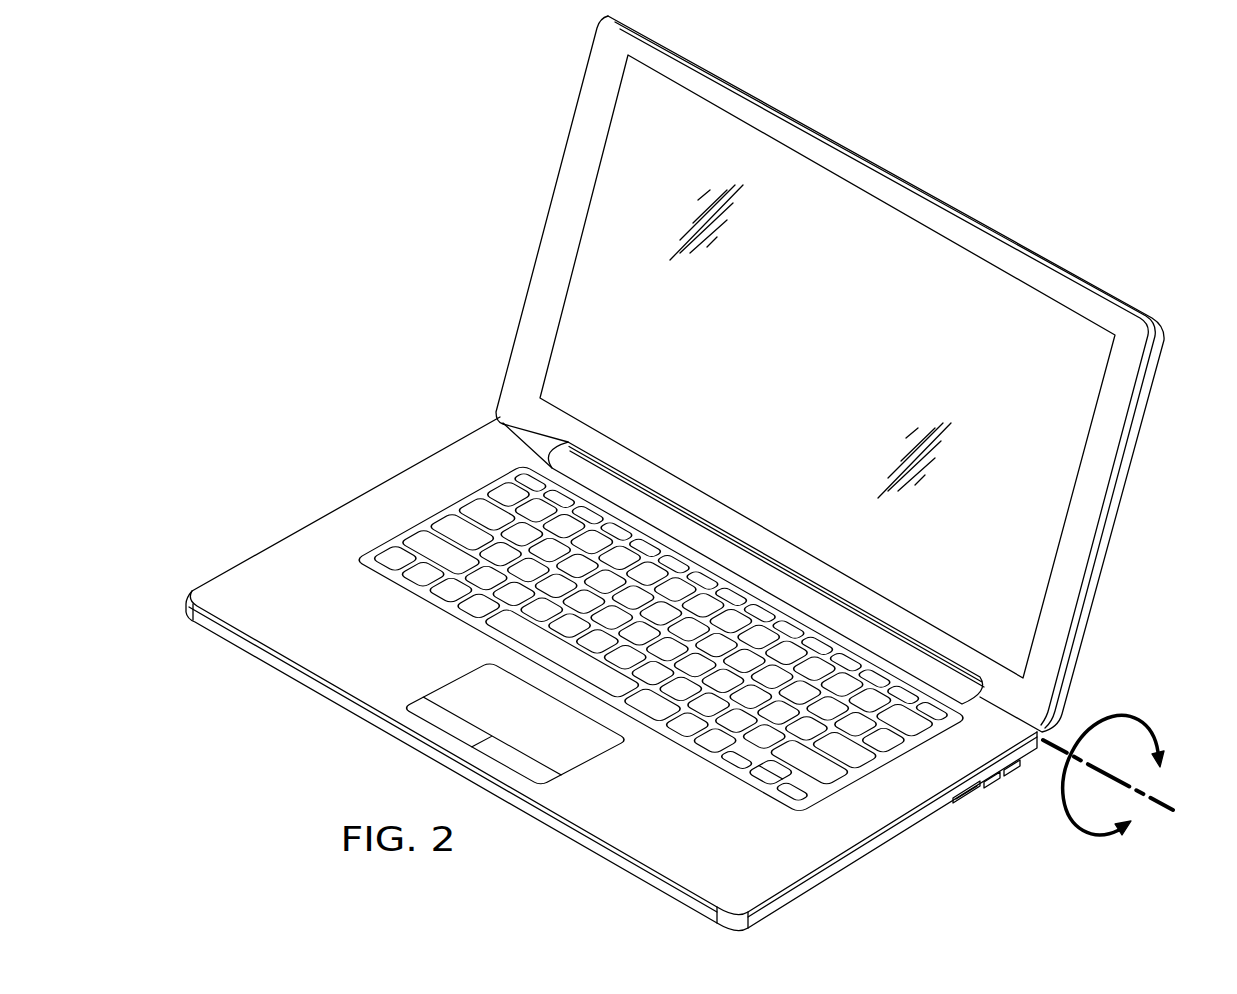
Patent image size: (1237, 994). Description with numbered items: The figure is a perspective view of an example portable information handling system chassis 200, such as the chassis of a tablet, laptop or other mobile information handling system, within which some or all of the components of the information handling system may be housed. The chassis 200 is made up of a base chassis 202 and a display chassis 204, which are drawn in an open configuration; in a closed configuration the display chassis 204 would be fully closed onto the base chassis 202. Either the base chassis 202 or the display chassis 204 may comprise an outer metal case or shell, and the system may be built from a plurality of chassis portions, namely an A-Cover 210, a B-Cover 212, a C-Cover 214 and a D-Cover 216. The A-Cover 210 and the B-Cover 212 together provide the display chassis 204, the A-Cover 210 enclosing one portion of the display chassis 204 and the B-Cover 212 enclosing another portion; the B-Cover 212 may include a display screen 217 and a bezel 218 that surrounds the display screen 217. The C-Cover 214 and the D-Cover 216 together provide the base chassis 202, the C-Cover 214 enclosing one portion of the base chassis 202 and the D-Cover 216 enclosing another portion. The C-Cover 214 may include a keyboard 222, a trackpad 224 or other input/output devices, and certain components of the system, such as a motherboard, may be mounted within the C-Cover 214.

The portable information handling system chassis 200 is at (1100, 168).
The base chassis 202 is at (862, 874).
The display chassis 204 is at (1140, 551).
The A-Cover 210 is at (1133, 464).
The B-Cover 212 is at (1090, 308).
The C-Cover 214 is at (258, 567).
The D-Cover 216 is at (316, 696).
The display screen 217 is at (907, 248).
The bezel 218 is at (753, 93).
The keyboard 222 is at (481, 492).
The trackpad 224 is at (575, 757).